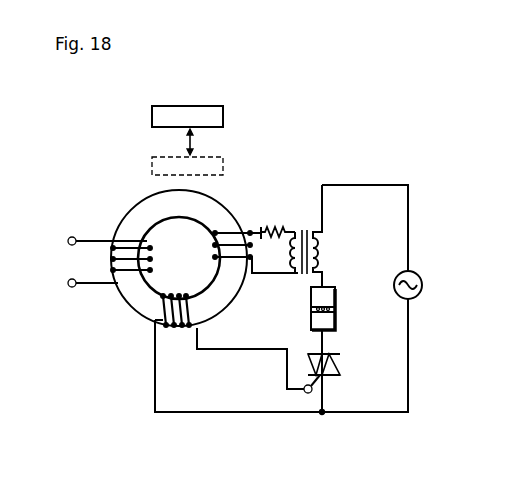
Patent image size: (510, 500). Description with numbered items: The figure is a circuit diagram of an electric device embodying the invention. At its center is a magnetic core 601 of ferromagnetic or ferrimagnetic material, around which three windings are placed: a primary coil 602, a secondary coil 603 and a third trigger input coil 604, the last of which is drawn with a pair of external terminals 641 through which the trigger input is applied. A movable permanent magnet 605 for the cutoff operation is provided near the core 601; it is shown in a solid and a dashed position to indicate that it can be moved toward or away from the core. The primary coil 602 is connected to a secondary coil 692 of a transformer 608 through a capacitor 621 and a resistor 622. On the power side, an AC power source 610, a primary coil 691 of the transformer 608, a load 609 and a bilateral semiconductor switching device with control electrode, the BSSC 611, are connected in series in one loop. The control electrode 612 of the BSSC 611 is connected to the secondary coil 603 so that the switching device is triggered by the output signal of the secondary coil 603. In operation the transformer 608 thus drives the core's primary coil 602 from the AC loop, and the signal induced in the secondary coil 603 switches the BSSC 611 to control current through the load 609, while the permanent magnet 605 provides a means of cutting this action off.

The magnetic core 601 is at (133, 213).
The primary coil 602 is at (229, 263).
The secondary coil 603 is at (155, 323).
The third trigger input coil 604 is at (127, 268).
The movable permanent magnet 605 is at (225, 117).
The transformer 608 is at (306, 232).
The load 609 is at (338, 302).
The AC power source 610 is at (421, 287).
The bilateral semiconductor switching device with control electrode (BSSC) 611 is at (332, 377).
The control electrode 612 is at (318, 378).
The capacitor 621 is at (253, 228).
The resistor 622 is at (283, 228).
The output terminals 641 is at (68, 281).
The primary coil of the transformer 691 is at (325, 252).
The secondary coil of the transformer 692 is at (296, 266).